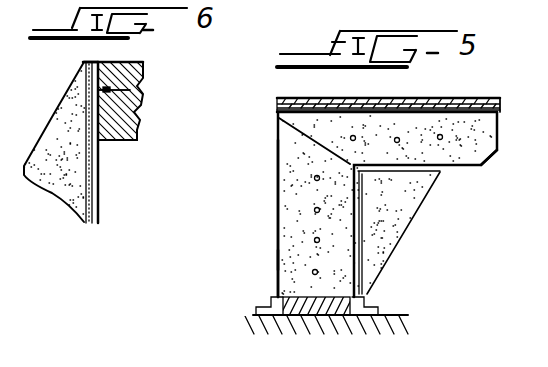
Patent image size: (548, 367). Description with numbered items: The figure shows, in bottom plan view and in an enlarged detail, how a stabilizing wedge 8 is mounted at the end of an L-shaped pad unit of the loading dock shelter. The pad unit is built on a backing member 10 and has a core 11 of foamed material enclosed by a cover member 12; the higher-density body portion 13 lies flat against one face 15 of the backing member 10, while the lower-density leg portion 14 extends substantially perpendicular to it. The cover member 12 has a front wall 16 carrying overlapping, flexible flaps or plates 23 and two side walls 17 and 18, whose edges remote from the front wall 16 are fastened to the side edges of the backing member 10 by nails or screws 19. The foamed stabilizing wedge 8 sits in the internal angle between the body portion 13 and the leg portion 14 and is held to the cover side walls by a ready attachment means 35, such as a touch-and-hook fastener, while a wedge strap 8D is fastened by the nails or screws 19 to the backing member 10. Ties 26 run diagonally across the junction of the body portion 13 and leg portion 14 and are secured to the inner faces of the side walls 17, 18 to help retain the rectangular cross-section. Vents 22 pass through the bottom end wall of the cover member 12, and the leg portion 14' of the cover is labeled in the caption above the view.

In FIG. 6, the stabilizing wedge 8 is at (50, 118).
In FIG. 5, the stabilizing wedge 8 is at (395, 200).
In FIG. 6, the wedge strap 8D is at (97, 61).
In FIG. 6, the backing member 10 is at (143, 122).
In FIG. 5, the backing member 10 is at (350, 316).
In FIG. 5, the core 11 is at (300, 240).
In FIG. 5, the cover member 12 is at (478, 165).
In FIG. 5, the body portion 13 is at (312, 218).
In FIG. 5, the leg portion 14 is at (388, 100).
In FIG. 5, the alternate top slab 14' is at (413, 11).
In FIG. 5, the face of backing member 15 is at (282, 290).
In FIG. 5, the front wall 16 is at (505, 96).
In FIG. 5, the side wall 17 is at (278, 266).
In FIG. 5, the side wall 18 is at (362, 260).
In FIG. 6, the nails or screws 19 is at (147, 97).
In FIG. 5, the nails or screws 19 is at (257, 309).
In FIG. 5, the vents 22 is at (399, 138).
In FIG. 5, the flaps or plates 23 is at (364, 84).
In FIG. 5, the ties 26 is at (307, 137).
In FIG. 6, the ready attachment means 35 is at (102, 217).
In FIG. 5, the ready attachment means 35 is at (362, 228).